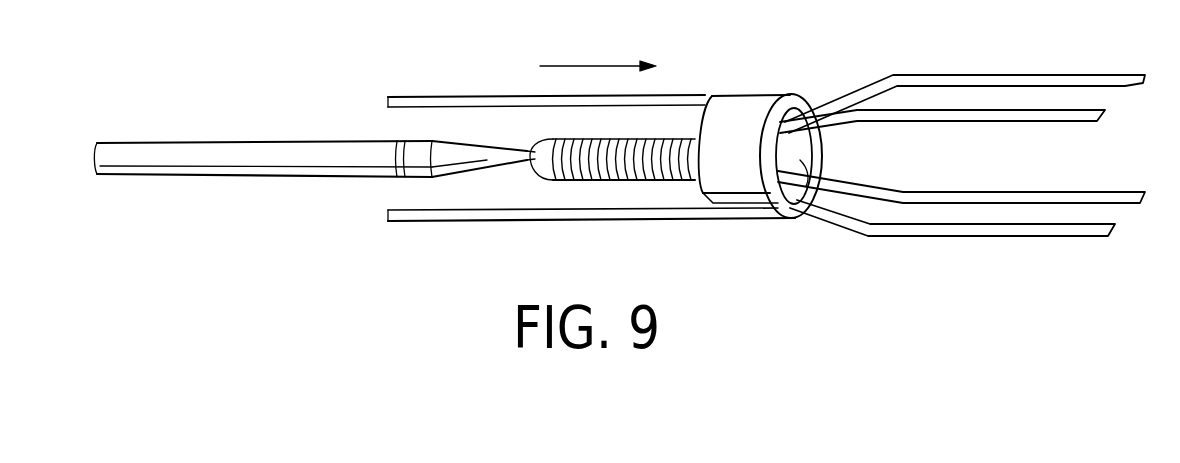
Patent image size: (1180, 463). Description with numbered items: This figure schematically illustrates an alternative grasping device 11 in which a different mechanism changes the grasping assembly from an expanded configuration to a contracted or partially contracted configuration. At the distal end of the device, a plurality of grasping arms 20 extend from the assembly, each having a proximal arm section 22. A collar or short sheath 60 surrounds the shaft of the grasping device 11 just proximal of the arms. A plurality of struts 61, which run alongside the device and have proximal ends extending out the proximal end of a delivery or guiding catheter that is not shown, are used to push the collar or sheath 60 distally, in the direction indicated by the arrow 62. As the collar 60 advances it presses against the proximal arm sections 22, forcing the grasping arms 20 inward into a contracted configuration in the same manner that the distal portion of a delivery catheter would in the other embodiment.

The grasping device 11 is at (225, 177).
The struts 61 is at (445, 97).
The arrow 62 is at (583, 65).
The collar or short sheath 60 is at (752, 110).
The grasping arms 20 is at (958, 108).
The proximal arm sections 22 is at (827, 222).